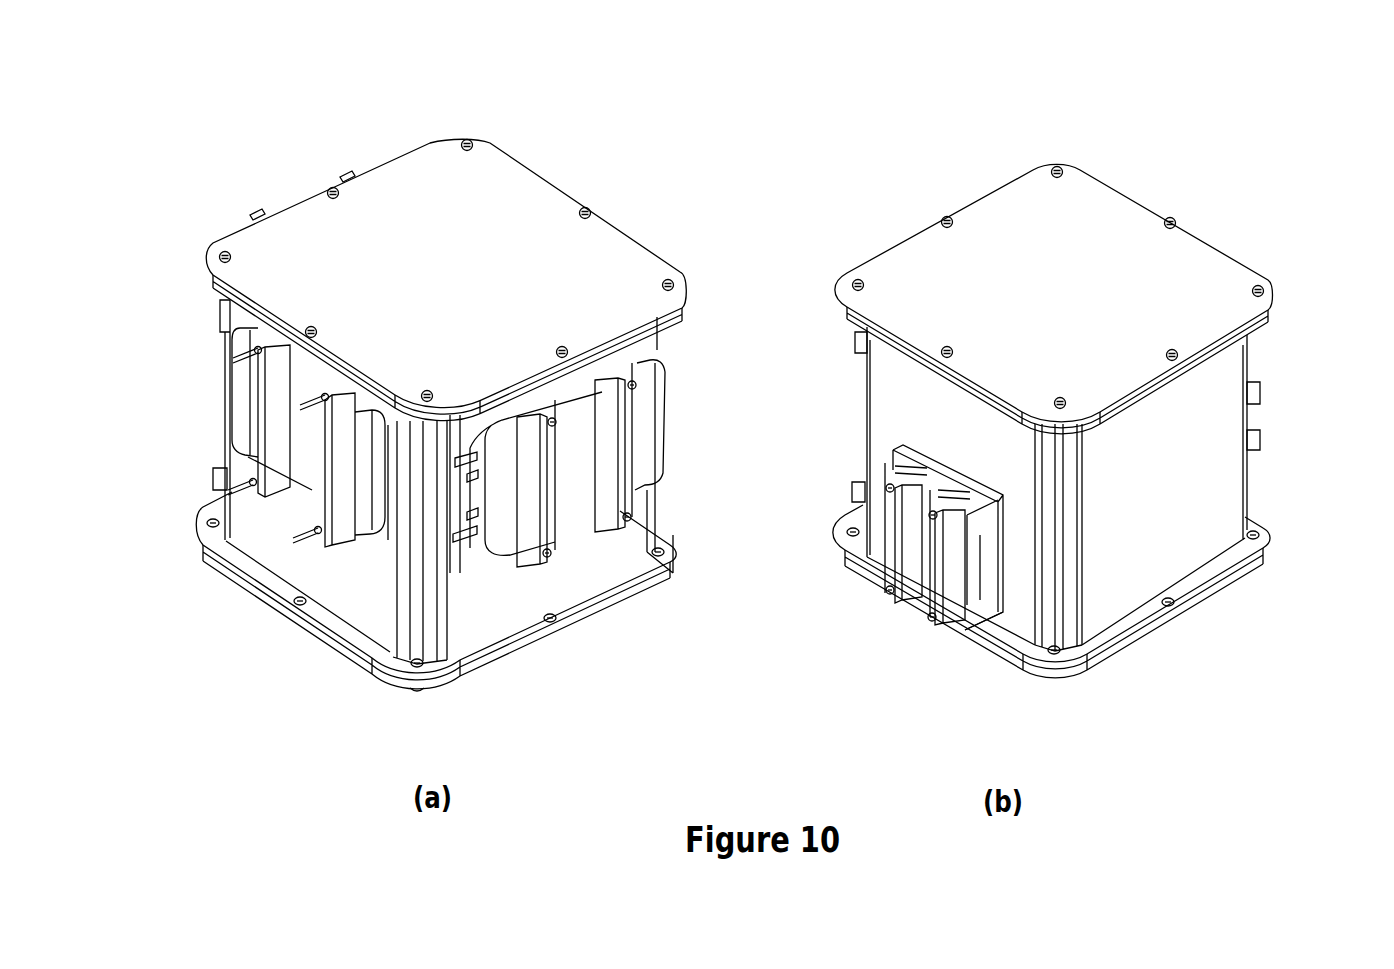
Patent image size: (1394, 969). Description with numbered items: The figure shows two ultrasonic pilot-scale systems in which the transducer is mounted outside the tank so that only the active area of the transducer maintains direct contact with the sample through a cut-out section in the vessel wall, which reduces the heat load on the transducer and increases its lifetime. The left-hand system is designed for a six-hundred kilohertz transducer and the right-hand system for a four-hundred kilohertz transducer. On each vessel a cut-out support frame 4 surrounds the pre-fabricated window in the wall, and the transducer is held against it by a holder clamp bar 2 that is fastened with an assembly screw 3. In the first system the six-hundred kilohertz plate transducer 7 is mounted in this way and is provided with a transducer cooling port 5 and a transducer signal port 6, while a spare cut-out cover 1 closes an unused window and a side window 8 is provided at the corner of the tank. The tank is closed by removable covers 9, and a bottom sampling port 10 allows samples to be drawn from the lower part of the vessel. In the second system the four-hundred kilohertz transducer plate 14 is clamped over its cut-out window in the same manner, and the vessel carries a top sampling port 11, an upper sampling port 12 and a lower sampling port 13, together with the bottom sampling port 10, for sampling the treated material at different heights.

The spare cut-out cover 1 is at (237, 390).
The holder clamp bar 2 is at (248, 447).
The assembly screw 3 is at (253, 478).
The cut-out support frame 4 is at (383, 547).
The transducer cooling port 5 is at (452, 552).
The transducer signal port 6 is at (460, 547).
The 600 kHz plate transducer 7 is at (505, 547).
The side window 8 is at (420, 637).
The removable covers 9 is at (573, 627).
The bottom sampling port 10 is at (213, 478).
The top sampling port 11 is at (845, 343).
The upper sampling port 12 is at (1265, 393).
The lower sampling port 13 is at (1265, 445).
The 400 kHz transducer plate 14 is at (980, 547).